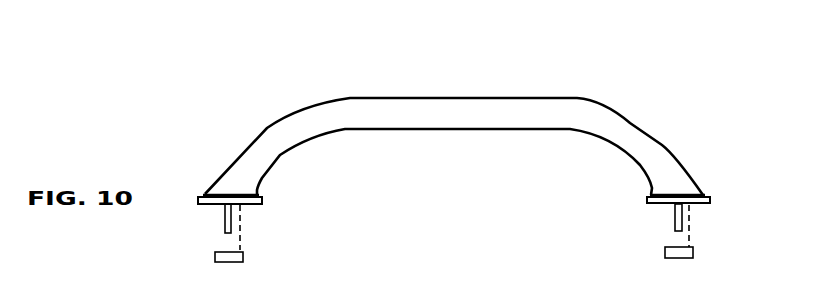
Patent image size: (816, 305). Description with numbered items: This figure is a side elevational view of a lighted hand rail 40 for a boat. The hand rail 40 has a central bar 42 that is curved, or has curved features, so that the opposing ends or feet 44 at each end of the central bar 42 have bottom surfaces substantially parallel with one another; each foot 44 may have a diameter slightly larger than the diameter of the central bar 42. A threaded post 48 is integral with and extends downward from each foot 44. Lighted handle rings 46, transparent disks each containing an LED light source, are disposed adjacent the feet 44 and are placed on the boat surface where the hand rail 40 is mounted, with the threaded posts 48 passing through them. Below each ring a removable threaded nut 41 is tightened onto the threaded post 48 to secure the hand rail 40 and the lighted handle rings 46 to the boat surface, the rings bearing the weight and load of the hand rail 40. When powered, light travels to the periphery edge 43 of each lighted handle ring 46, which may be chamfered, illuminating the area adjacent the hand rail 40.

The hand rail 40 is at (675, 88).
The threaded nut 41 is at (243, 257).
The central bar 42 is at (495, 112).
The periphery edge 43 is at (262, 204).
The foot 44 is at (207, 192).
The lighted handle ring 46 is at (216, 205).
The threaded post 48 is at (675, 220).